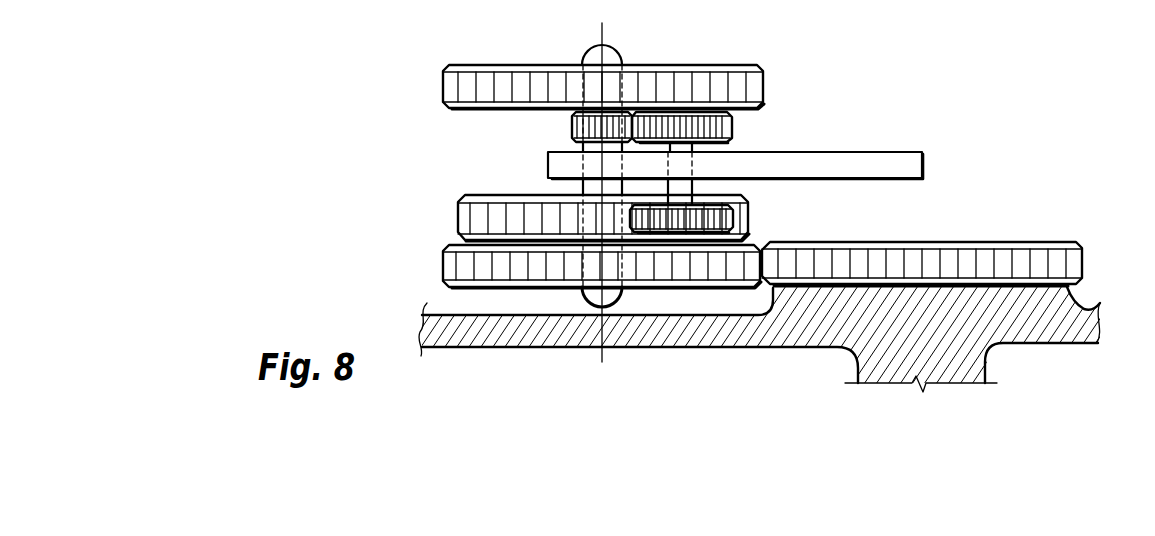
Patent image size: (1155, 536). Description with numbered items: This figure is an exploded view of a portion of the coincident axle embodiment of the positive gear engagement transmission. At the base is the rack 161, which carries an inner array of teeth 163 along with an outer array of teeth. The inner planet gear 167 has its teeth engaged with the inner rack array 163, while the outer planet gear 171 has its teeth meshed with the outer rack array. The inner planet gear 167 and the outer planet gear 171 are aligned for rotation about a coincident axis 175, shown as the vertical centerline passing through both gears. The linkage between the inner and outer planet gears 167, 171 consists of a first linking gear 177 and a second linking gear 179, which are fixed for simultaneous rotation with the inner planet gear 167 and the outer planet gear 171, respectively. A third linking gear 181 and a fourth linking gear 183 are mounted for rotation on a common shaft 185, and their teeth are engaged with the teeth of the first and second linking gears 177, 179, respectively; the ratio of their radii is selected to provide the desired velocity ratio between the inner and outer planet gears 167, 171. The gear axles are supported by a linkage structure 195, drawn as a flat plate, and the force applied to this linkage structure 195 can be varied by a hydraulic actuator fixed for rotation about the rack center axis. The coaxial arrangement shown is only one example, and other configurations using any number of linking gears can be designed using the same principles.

The rack 161 is at (1012, 330).
The inner array of teeth 163 is at (1083, 262).
The inner planet gear 167 is at (450, 247).
The outer planet gear 171 is at (735, 63).
The coincident axis 175 is at (607, 35).
The first linking gear 177 is at (482, 194).
The second linking gear 179 is at (574, 126).
The third linking gear 181 is at (726, 208).
The fourth linking gear 183 is at (733, 124).
The common shaft 185 is at (693, 146).
The linkage structure 195 is at (895, 158).